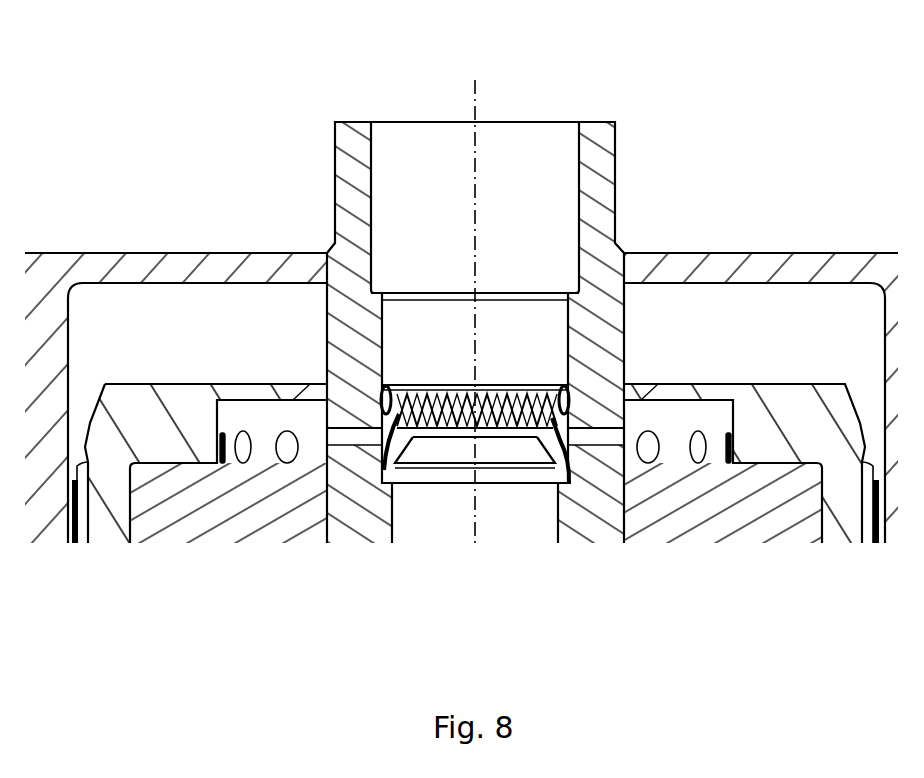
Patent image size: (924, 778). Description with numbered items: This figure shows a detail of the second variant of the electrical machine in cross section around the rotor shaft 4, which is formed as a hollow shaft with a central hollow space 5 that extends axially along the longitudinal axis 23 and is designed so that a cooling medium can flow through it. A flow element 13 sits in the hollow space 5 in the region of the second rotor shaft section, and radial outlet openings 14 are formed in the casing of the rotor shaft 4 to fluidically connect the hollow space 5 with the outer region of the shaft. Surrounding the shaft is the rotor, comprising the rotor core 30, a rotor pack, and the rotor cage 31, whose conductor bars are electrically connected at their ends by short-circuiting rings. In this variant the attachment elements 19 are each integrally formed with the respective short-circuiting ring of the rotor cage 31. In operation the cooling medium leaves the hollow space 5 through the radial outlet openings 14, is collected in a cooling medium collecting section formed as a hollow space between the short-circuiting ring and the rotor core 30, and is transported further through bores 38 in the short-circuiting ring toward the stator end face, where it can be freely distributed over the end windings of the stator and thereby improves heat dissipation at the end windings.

The rotor shaft 4 is at (350, 340).
The hollow space 5 is at (415, 313).
The longitudinal axis 23 is at (472, 292).
The radial outlet openings 14 is at (358, 438).
The flow element 13 is at (505, 447).
The attachment elements 19 is at (260, 422).
The rotor core 30 is at (219, 492).
The rotor cage 31 is at (160, 418).
The bores 38 is at (242, 455).